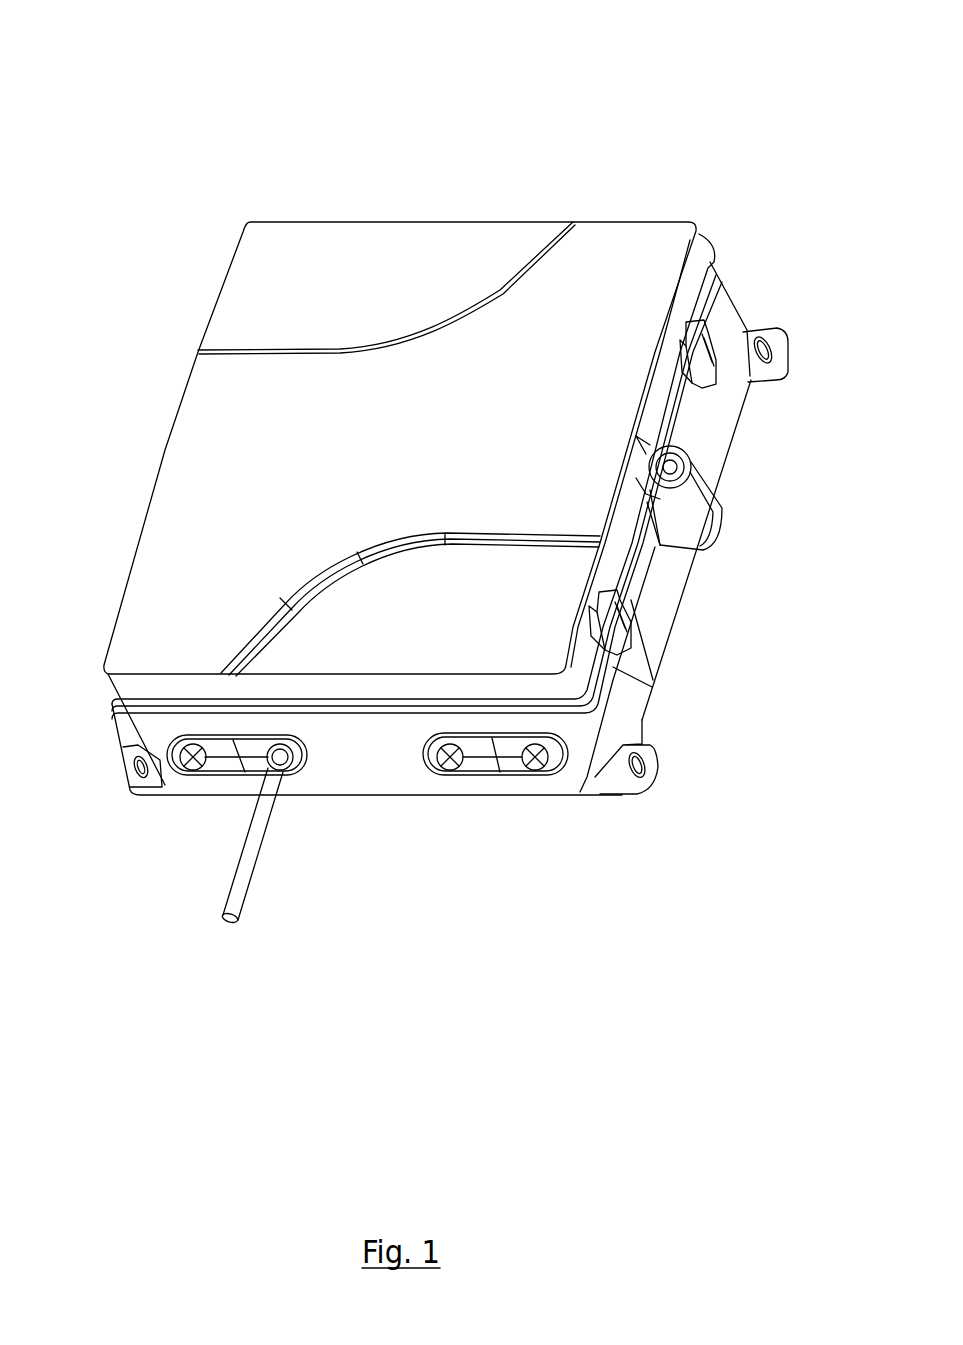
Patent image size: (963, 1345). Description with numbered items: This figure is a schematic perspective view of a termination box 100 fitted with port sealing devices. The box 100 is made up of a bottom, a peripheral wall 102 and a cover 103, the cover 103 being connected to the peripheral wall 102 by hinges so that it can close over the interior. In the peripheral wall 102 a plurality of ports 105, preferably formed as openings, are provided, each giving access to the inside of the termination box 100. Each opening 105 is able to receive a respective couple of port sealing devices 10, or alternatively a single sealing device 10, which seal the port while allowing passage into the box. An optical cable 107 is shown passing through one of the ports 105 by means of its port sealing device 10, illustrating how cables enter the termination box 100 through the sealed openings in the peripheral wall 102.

The termination box 100 is at (303, 182).
The cover 103 is at (573, 287).
The peripheral wall 102 is at (375, 765).
The port 105 is at (218, 790).
The port sealing device 10 is at (475, 768).
The optical cable 107 is at (248, 857).